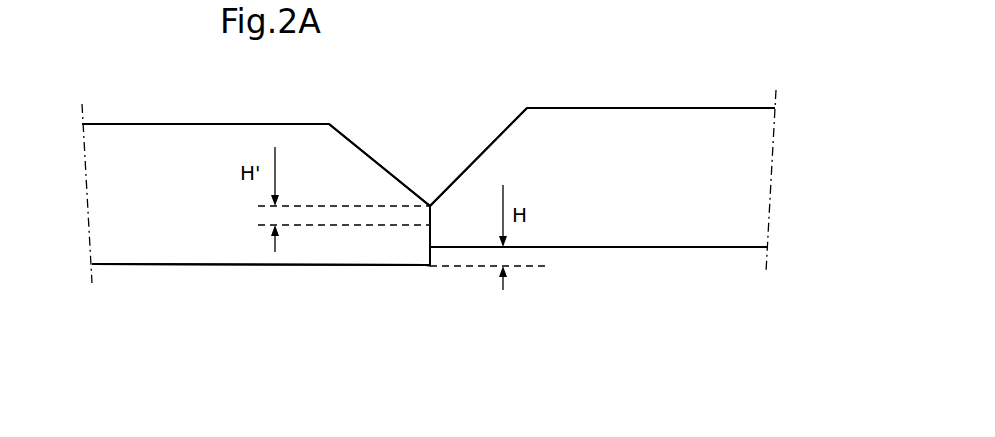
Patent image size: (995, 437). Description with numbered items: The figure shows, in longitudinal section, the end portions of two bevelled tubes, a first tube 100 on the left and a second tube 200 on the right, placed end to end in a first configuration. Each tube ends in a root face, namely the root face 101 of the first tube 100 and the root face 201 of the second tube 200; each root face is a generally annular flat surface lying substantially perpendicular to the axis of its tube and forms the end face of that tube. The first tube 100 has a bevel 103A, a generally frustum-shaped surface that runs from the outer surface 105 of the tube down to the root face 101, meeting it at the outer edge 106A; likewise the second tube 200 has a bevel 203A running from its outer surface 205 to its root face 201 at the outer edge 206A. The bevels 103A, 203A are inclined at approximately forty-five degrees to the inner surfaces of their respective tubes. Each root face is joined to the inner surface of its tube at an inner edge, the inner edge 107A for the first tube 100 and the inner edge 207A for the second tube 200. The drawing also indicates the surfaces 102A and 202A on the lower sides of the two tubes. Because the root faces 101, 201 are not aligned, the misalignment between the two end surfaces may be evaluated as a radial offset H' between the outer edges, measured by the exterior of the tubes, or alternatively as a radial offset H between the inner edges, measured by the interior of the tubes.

The first tube 100 is at (122, 248).
The outer surface of tube 105 is at (174, 112).
The bottom surface of first substrate 102A is at (315, 276).
The bevel 103A is at (378, 160).
The outer edge 206A is at (427, 194).
The outer edge 106A is at (443, 225).
The root face 201 is at (430, 232).
The inner edge 107A is at (435, 279).
The inner edge 207A is at (442, 257).
The root face 101 is at (433, 241).
The second tube 200 is at (705, 228).
The bevel 203A is at (499, 135).
The outer surface of tube 205 is at (666, 96).
The lower top surface of second substrate 202A is at (600, 261).